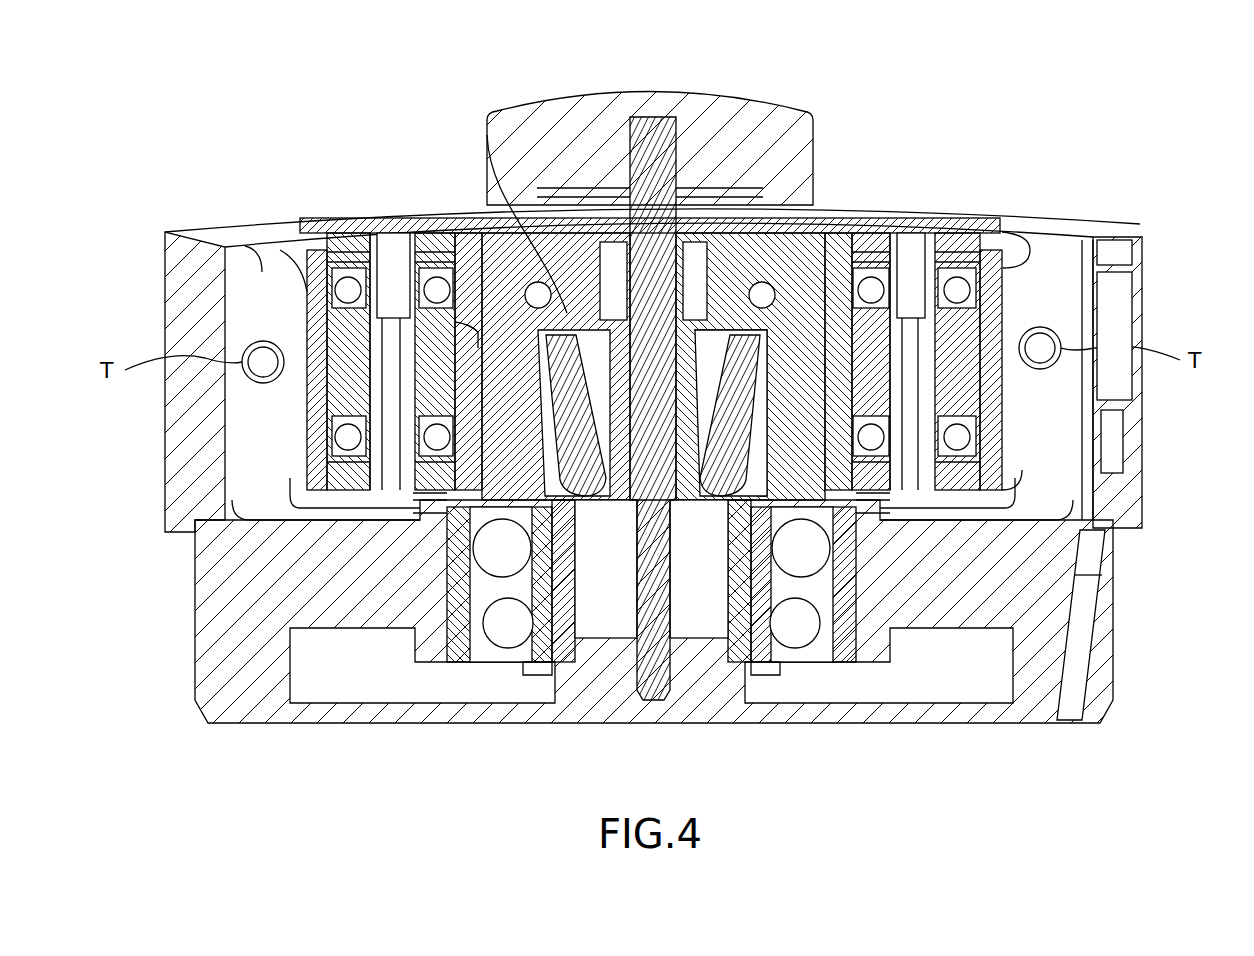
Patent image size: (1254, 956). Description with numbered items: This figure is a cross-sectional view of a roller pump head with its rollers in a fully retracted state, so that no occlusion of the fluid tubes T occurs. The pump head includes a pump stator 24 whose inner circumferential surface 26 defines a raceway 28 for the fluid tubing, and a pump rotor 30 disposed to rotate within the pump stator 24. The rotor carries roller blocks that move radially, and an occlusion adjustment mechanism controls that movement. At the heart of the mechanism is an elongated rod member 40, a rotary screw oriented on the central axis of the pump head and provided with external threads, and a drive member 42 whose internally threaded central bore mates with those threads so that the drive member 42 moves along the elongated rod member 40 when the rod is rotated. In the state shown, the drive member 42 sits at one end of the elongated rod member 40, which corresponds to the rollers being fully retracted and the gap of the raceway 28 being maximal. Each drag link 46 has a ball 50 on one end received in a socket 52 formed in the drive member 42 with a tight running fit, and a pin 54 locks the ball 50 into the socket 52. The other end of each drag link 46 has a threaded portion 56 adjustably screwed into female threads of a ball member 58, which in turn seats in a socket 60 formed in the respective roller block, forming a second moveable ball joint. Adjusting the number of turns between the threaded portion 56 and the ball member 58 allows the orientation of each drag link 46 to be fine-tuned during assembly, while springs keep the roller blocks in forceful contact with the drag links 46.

The pump stator 24 is at (1100, 232).
The inner circumferential surface 26 is at (258, 268).
The raceway 28 is at (1055, 268).
The pump rotor 30 is at (785, 252).
The elongated rod member 40 is at (658, 116).
The drive member 42 is at (705, 665).
The drag link 46 is at (565, 405).
The ball 50 is at (815, 508).
The socket 52 is at (470, 500).
The pin 54 is at (708, 490).
The threaded portion 56 is at (560, 335).
The ball member 58 is at (487, 135).
The socket 60 is at (482, 316).